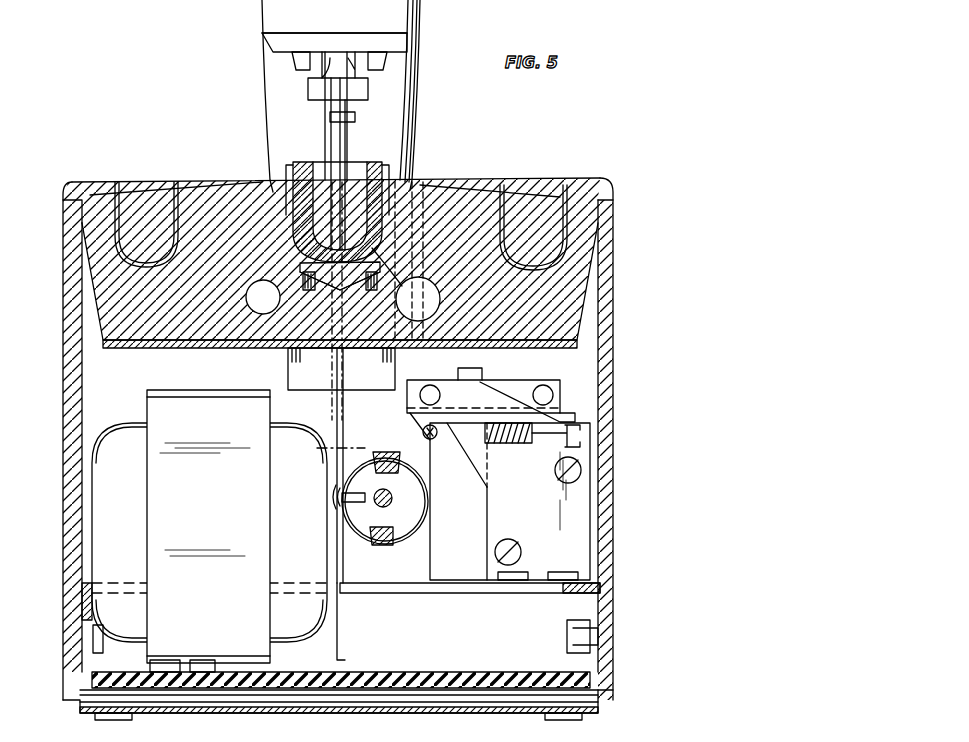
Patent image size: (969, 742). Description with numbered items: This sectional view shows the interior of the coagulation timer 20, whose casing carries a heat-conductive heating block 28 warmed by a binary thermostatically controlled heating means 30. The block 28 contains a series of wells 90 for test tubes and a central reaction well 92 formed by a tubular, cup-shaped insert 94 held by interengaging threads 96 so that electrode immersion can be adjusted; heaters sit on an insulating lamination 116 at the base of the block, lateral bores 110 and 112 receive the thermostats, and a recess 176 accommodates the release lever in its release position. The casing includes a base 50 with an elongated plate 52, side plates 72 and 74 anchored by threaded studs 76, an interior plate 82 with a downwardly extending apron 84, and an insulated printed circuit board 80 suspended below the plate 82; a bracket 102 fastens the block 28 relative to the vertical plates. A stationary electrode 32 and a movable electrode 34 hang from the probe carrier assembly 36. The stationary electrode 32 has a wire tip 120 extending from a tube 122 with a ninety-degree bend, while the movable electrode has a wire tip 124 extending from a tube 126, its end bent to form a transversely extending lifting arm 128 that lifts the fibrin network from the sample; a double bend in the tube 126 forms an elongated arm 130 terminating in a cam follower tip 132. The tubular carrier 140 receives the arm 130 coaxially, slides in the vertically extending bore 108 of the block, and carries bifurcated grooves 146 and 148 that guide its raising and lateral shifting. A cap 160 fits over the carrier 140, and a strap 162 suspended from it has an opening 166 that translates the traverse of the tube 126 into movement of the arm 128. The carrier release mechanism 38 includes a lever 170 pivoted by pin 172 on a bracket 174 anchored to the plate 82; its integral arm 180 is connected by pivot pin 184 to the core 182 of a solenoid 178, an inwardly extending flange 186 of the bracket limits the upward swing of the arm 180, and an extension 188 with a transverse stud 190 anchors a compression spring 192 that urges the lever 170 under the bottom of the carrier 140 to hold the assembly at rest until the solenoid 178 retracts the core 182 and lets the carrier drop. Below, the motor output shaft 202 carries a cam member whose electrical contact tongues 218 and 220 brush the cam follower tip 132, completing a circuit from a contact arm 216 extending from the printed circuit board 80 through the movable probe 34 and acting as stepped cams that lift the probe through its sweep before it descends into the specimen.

The coagulation timer 20 is at (213, 121).
The heating block 28 is at (527, 167).
The binary thermostatically controlled heating means 30 is at (200, 360).
The stationary electrode 32 is at (355, 155).
The movable electrode 34 is at (313, 118).
The probe carrier assembly 36 is at (427, 64).
The carrier release mechanism 38 is at (600, 427).
The base 50 is at (484, 720).
The elongated plate 52 is at (382, 714).
The side plate 72 is at (78, 350).
The side plate 74 is at (614, 525).
The threaded stud 76 is at (105, 640).
The printed circuit board 80 is at (438, 662).
The plate 82 is at (465, 595).
The apron 84 is at (92, 624).
The wells 90 is at (145, 200).
The reaction well 92 is at (380, 166).
The cup-shaped insert 94 is at (262, 184).
The interengaging threads 96 is at (343, 284).
The bracket 102 is at (406, 592).
The vertically extending bore 108 is at (248, 181).
The lateral bore 110 is at (250, 346).
The lateral bore 112 is at (488, 348).
The lamination 116 is at (170, 345).
The wire tip 120 is at (385, 160).
The tube 122 is at (340, 146).
The wire tip 124 is at (292, 180).
The tube 126 is at (326, 134).
The lifting arm 128 is at (337, 212).
The elongated arm 130 is at (337, 422).
The cam follower tip 132 is at (375, 533).
The tubular carrier 140 is at (318, 390).
The bifurcated groove 146 is at (392, 372).
The bifurcated groove 148 is at (300, 374).
The cap 160 is at (300, 48).
The strap 162 is at (312, 84).
The opening 166 is at (356, 84).
The lever 170 is at (412, 174).
The pin 172 is at (424, 398).
The bracket 174 is at (493, 531).
The recess 176 is at (325, 171).
The solenoid 178 is at (570, 546).
The arm 180 is at (491, 393).
The core 182 is at (563, 410).
The pivot pin 184 is at (546, 390).
The inwardly extending flange 186 is at (467, 358).
The extension 188 is at (423, 432).
The stud 190 is at (455, 471).
The compression spring 192 is at (508, 446).
The output shaft 202 is at (392, 502).
The contact arm 216 is at (333, 497).
The electrical contact tongue 218 is at (398, 458).
The electrical contact tongue 220 is at (398, 546).